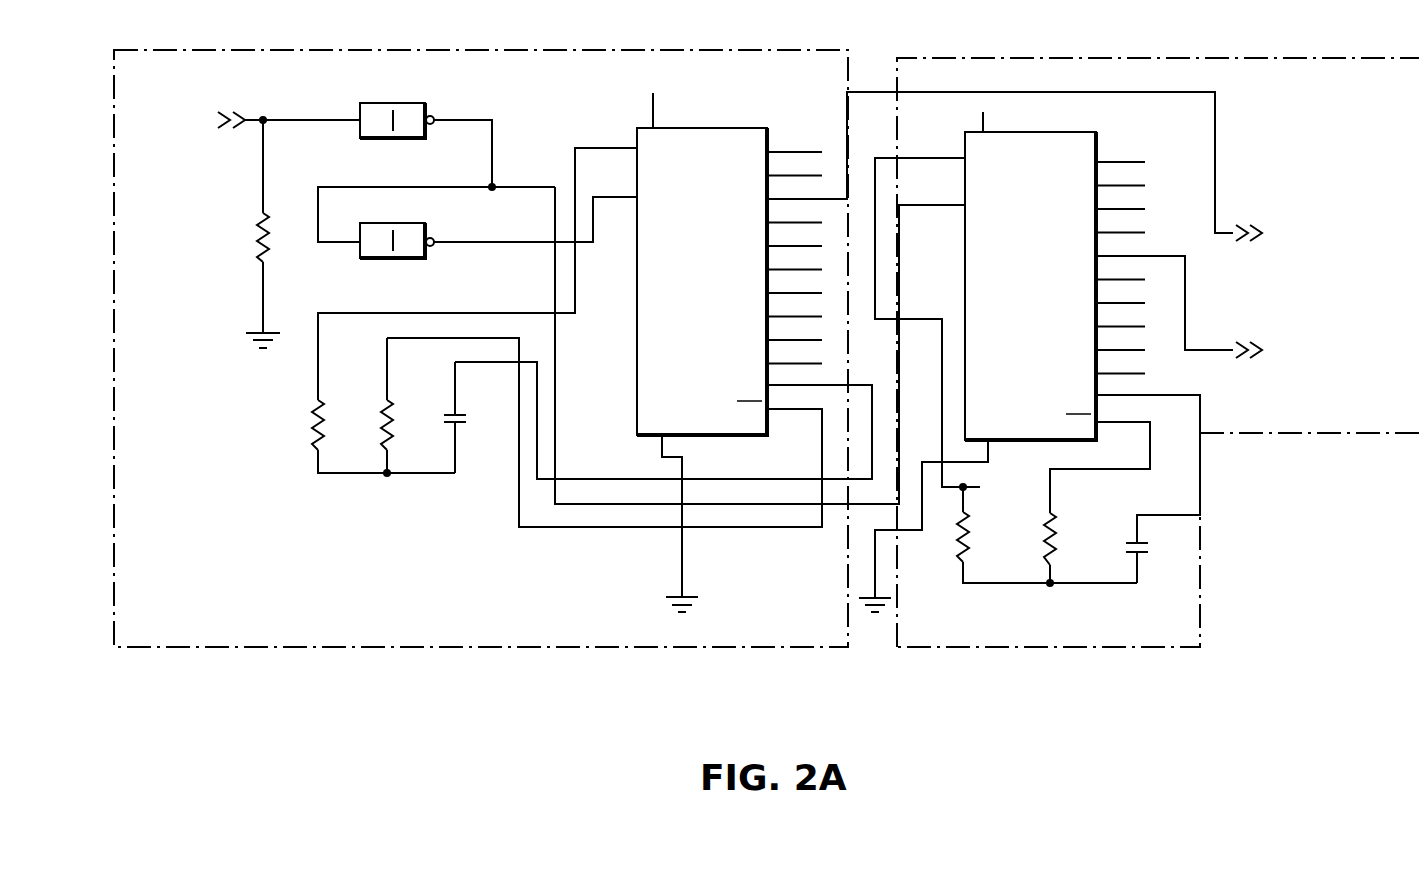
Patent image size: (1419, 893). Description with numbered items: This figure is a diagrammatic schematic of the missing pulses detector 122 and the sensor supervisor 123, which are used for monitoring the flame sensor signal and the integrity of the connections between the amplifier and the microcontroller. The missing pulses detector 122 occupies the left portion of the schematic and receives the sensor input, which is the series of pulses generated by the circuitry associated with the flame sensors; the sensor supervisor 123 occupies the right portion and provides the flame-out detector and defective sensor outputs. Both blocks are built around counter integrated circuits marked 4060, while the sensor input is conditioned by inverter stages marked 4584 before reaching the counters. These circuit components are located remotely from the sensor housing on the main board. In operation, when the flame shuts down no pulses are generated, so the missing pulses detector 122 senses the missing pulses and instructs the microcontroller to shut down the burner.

The missing pulses detector 122 is at (462, 650).
The sensor supervisor 123 is at (1030, 657).
The 4060 counter integrated circuit 4060 is at (858, 256).
The 4584 inverter 4584 is at (397, 182).